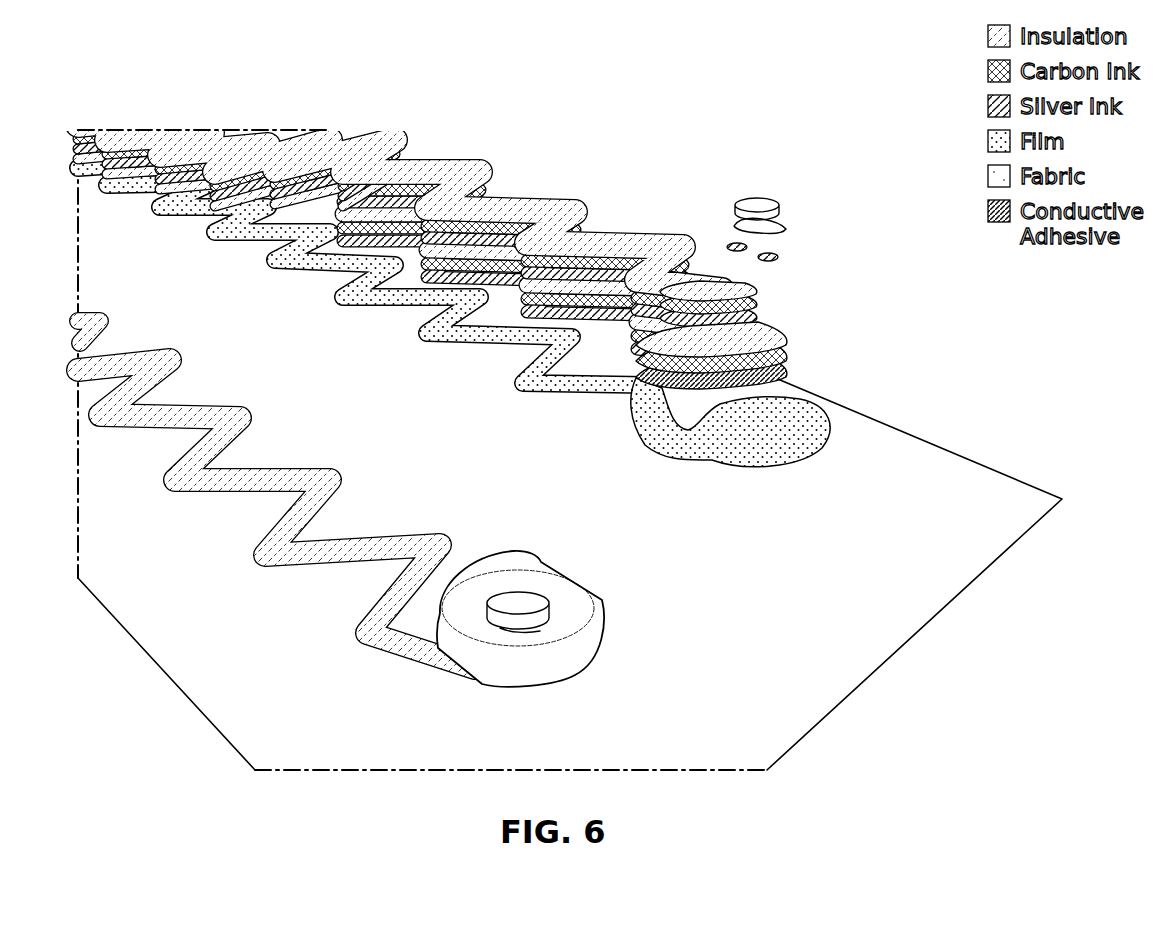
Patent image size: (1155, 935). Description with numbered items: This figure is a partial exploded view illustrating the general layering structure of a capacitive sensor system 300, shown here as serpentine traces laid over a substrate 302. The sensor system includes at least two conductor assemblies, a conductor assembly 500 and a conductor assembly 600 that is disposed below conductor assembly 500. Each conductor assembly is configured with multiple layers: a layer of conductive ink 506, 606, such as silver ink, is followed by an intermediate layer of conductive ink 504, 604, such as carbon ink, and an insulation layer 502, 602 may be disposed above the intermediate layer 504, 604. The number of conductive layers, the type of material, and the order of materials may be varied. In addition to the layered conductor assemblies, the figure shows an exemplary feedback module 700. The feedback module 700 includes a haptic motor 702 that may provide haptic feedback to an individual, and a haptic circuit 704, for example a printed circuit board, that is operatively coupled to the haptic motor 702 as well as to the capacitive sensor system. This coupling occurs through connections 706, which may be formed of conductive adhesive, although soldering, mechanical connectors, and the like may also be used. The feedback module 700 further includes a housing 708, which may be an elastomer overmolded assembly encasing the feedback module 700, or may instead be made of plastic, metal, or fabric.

The capacitive sensor system 300 is at (492, 157).
The fabric substrate 302 is at (411, 425).
The conductor assembly 500 is at (819, 279).
The insulation layer 502 is at (737, 282).
The intermediate layer of conductive ink 504 is at (757, 299).
The layer of conductive ink 506 is at (757, 313).
The conductor assembly 600 is at (809, 358).
The insulation layer 602 is at (775, 336).
The intermediate layer of conductive ink 604 is at (778, 356).
The layer of conductive ink 606 is at (780, 373).
The feedback module 700 is at (581, 613).
The haptic motor 702 is at (765, 193).
The haptic circuit 704 is at (783, 226).
The connections 706 is at (764, 254).
The housing 708 is at (583, 600).